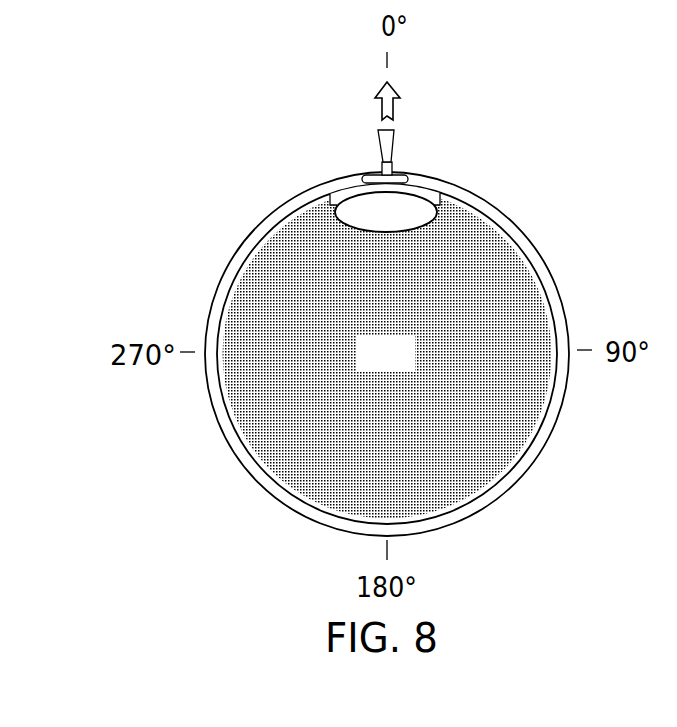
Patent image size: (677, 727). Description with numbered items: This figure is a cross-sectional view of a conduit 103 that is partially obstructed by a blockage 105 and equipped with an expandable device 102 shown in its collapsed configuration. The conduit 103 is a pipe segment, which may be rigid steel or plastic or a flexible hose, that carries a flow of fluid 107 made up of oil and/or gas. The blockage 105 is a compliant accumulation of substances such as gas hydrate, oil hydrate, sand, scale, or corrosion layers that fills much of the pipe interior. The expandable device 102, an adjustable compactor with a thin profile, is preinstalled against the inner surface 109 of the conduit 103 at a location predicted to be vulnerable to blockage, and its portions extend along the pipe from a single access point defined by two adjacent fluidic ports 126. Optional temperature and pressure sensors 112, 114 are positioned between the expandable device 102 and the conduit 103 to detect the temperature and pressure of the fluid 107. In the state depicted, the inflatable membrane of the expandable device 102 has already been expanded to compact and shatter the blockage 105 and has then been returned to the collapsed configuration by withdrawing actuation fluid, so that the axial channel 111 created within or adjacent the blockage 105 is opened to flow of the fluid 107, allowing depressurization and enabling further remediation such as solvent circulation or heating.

The expandable device 102 is at (426, 187).
The conduit 103 is at (557, 282).
The blockage 105 is at (408, 365).
The fluid 107 is at (299, 202).
The axial channel 111 is at (336, 210).
The inner surface 109 is at (266, 452).
The temperature sensor 112 is at (454, 154).
The pressure sensor 114 is at (404, 177).
The fluidic ports 126 is at (379, 149).